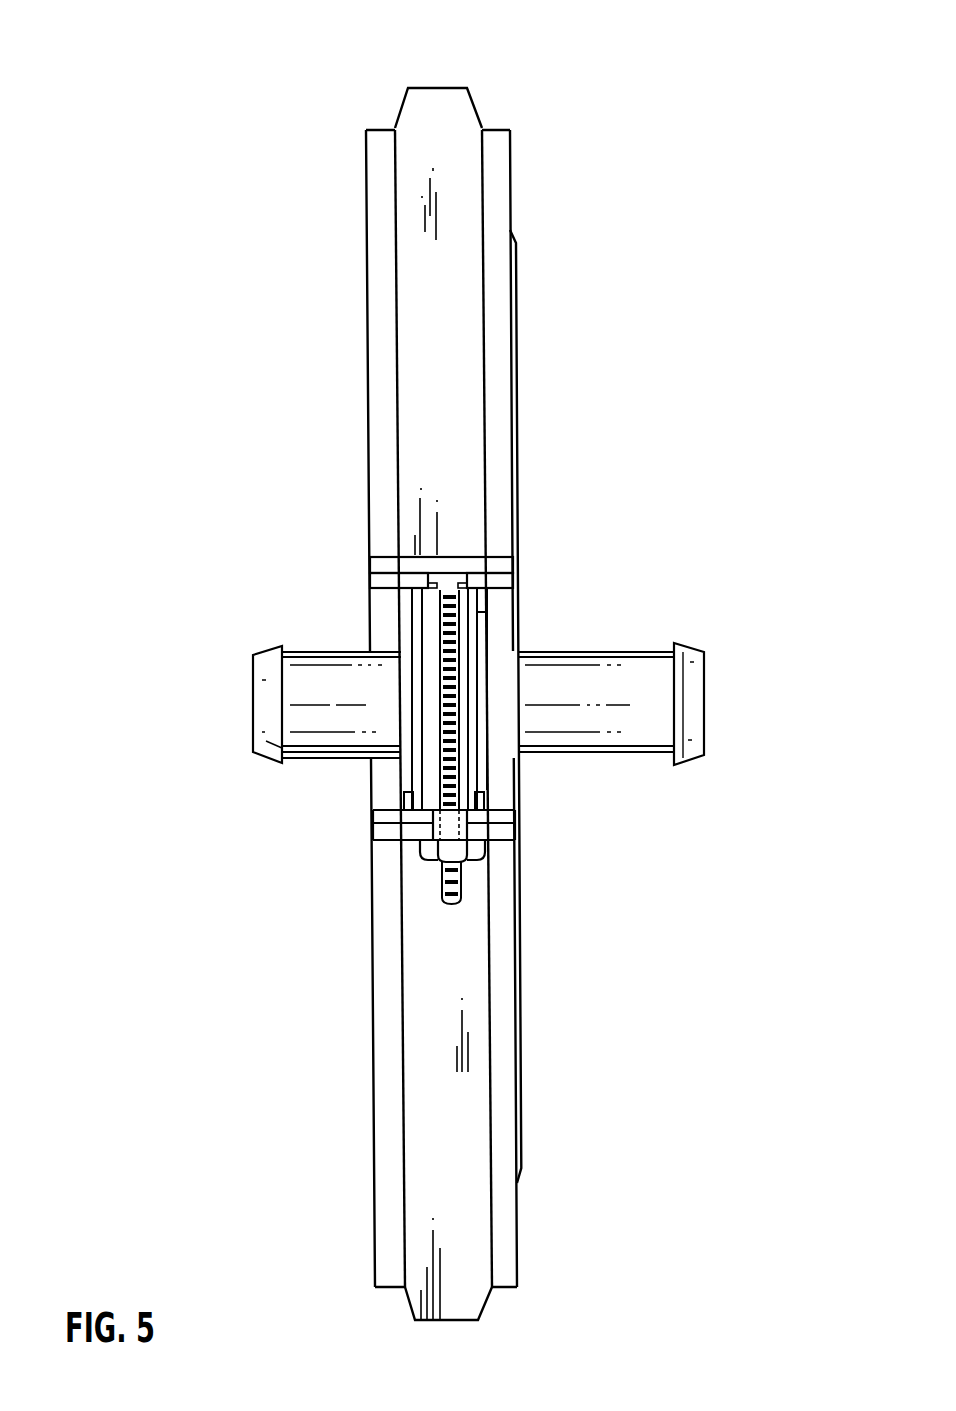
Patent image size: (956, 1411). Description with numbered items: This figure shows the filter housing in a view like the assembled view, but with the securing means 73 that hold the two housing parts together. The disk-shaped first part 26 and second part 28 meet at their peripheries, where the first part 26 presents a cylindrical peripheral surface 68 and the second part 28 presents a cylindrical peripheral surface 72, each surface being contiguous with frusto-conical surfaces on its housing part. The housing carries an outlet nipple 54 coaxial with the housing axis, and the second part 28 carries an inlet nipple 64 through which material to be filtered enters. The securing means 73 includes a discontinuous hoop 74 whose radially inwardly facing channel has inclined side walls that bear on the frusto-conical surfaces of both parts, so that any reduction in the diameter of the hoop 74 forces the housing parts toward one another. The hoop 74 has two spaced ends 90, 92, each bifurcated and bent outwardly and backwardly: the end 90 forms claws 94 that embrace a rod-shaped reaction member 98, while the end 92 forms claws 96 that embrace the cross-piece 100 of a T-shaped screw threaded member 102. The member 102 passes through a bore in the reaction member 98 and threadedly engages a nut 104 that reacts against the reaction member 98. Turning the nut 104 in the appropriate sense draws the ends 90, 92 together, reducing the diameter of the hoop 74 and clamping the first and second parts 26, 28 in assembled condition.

The securing means 73 is at (386, 93).
The hoop 74 is at (453, 105).
The first part 26 is at (524, 1000).
The outlet nipple 54 is at (638, 650).
The inlet nipple 64 is at (292, 757).
The second part 28 is at (415, 620).
The cylindrical peripheral surface 72 is at (415, 727).
The end 92 is at (478, 593).
The cross-piece 100 is at (455, 568).
The claws 96 is at (380, 580).
The T-shaped screw threaded member 102 is at (462, 648).
The cylindrical peripheral surface 68 is at (470, 793).
The end 90 is at (380, 830).
The claws 94 is at (500, 817).
The reaction member 98 is at (493, 831).
The nut 104 is at (470, 862).